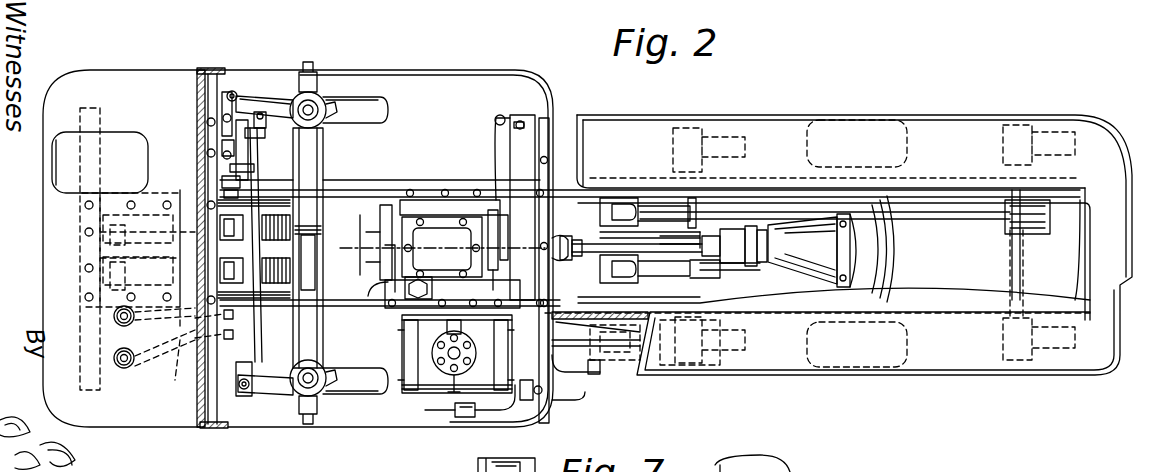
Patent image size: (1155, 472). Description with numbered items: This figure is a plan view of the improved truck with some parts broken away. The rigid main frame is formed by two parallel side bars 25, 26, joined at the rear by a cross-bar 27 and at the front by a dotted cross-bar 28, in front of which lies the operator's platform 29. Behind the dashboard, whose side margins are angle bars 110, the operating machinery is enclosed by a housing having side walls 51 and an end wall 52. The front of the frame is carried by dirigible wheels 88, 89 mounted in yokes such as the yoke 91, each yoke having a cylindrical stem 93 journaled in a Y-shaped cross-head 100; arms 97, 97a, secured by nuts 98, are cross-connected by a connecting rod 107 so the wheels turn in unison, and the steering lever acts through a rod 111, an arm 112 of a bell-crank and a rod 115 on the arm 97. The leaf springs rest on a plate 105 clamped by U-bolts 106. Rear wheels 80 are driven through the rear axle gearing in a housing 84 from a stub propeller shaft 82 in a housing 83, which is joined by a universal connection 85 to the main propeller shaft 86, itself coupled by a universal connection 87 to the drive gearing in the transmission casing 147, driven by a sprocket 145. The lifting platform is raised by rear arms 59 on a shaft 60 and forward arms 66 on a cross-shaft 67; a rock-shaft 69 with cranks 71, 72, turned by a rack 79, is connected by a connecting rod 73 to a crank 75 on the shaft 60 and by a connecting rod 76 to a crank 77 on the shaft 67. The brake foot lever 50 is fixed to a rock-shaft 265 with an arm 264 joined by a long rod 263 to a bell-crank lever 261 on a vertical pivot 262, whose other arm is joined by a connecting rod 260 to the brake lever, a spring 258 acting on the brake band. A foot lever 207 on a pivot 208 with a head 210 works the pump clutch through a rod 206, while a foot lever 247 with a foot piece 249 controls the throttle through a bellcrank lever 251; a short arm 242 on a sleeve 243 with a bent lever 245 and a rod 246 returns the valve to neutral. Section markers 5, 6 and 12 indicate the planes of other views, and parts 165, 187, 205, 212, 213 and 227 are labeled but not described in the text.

The section line 5- 5 is at (585, 292).
The section line 6- 6 is at (288, 458).
The section line 12- 12 is at (350, 236).
The side bar 25 is at (352, 190).
The side bar 26 is at (372, 302).
The cross-bar 27 is at (1086, 212).
The cross-bar 28 is at (80, 336).
The platform 29 is at (43, 244).
The foot lever 50 is at (52, 160).
The side walls 51 is at (398, 69).
The end wall 52 is at (556, 118).
The arm 59 is at (1040, 140).
The shaft 60 is at (1022, 262).
The arm 66 is at (718, 140).
The cross-shaft 67 is at (694, 205).
The rock-shaft 69 is at (606, 258).
The crank 71 is at (625, 203).
The crank 72 is at (640, 282).
The connecting rod 73 is at (765, 210).
The crank 75 is at (1032, 232).
The connecting rod 76 is at (662, 285).
The crank 77 is at (716, 272).
The rack 79 is at (650, 370).
The wheels 80 is at (848, 120).
The stub propeller shaft 82 is at (812, 250).
The housing 83 is at (812, 268).
The housing 84 is at (893, 266).
The universal connection 85 is at (748, 266).
The main propeller shaft 86 is at (600, 245).
The universal connection 87 is at (556, 236).
The dirigible wheel 88 is at (376, 104).
The dirigible wheel 89 is at (372, 396).
The yoke 91 is at (321, 100).
The cylindrical stem 93 is at (321, 112).
The arm 97 is at (275, 396).
The arm 97a is at (272, 100).
The nut 98 is at (321, 118).
The Y-shaped cross-head 100 is at (312, 298).
The plate 105 is at (82, 231).
The U-bolts 106 is at (138, 252).
The connecting rod 107 is at (262, 129).
The angle bars 110 is at (213, 66).
The rod 111 is at (234, 90).
The arm 112 is at (222, 100).
The rod 115 is at (256, 165).
The sprocket 145 is at (384, 222).
The casing 147 is at (430, 215).
The bracket arm 165 is at (388, 284).
The support 187 is at (582, 365).
The lower clip 205 is at (231, 340).
The rod 206 is at (236, 315).
The foot lever 207 is at (180, 340).
The pivot 208 is at (185, 345).
The head 210 is at (124, 369).
The engine block 212 is at (438, 306).
The lead 213 is at (454, 392).
The distributor 227 is at (430, 352).
The short arm 242 is at (578, 422).
The sleeve 243 is at (520, 400).
The bent lever 245 is at (488, 408).
The rod 246 is at (425, 410).
The foot lever 247 is at (148, 320).
The head or foot piece 249 is at (112, 316).
The bellcrank lever 251 is at (500, 268).
The spring 258 is at (562, 378).
The connecting rod 260 is at (510, 150).
The bell-crank lever 261 is at (552, 116).
The vertical pivot 262 is at (520, 200).
The long rod 263 is at (408, 198).
The arm 264 is at (222, 182).
The rock-shaft 265 is at (224, 195).